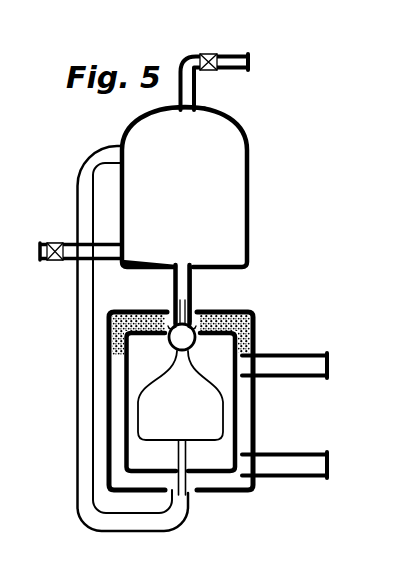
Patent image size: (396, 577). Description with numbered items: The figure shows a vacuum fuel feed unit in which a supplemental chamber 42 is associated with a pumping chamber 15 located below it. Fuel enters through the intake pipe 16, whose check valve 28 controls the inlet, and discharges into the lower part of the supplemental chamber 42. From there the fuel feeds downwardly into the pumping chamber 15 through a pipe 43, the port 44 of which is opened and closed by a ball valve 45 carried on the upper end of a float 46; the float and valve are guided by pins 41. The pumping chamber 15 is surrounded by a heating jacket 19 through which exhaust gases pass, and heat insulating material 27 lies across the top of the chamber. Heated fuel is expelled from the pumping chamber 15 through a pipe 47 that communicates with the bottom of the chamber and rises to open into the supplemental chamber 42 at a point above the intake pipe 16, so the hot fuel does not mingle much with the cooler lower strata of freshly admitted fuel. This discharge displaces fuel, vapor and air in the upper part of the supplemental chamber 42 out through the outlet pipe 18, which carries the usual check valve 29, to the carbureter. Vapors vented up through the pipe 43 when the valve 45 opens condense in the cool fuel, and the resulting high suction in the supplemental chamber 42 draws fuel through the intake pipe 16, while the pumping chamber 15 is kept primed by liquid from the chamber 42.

The pumping chamber 15 is at (252, 313).
The intake pipe 16 is at (75, 262).
The outlet pipe 18 is at (245, 71).
The heating jacket 19 is at (243, 418).
The heat insulating material 27 is at (222, 330).
The check valve 28 is at (52, 262).
The check valve 29 is at (208, 71).
The pins 41 is at (174, 312).
The supplemental chamber 42 is at (228, 200).
The pipe 43 is at (194, 291).
The port 44 is at (177, 323).
The ball valve 45 is at (178, 341).
The float 46 is at (183, 400).
The pipe 47 is at (78, 462).